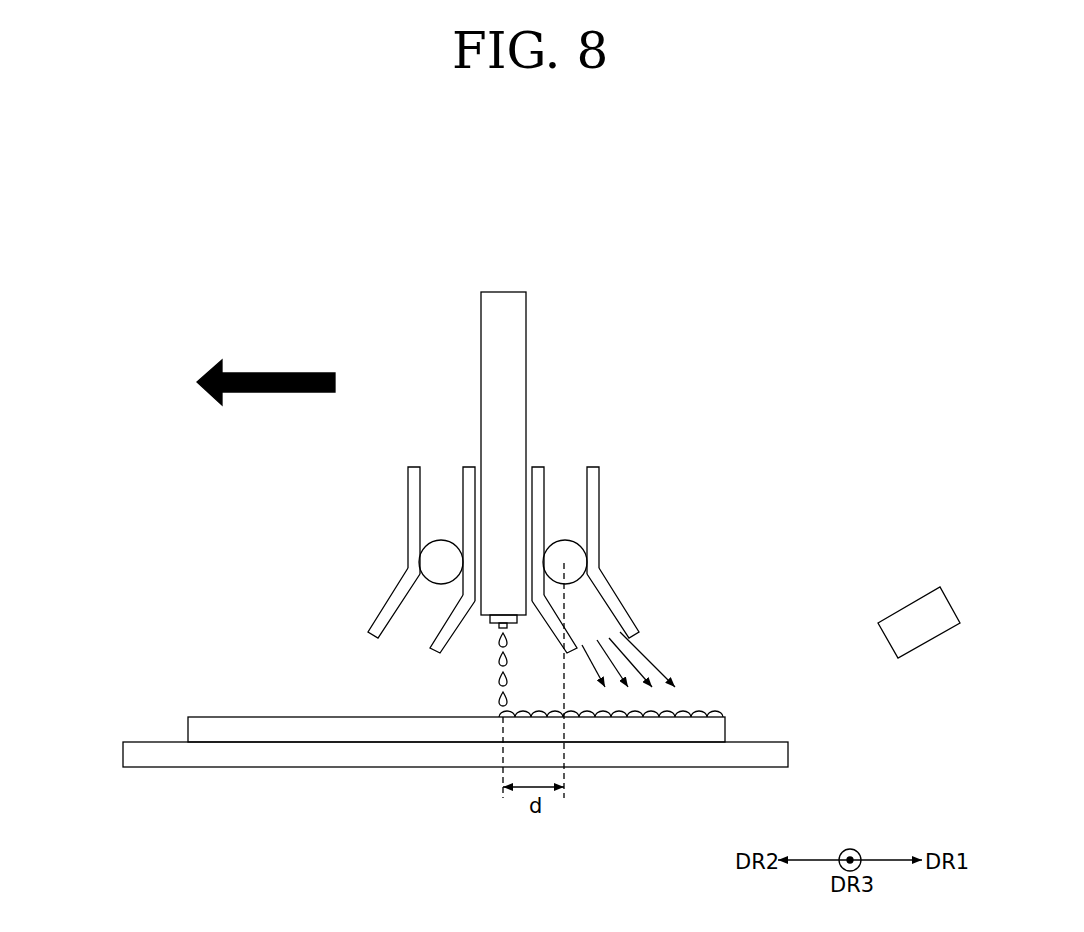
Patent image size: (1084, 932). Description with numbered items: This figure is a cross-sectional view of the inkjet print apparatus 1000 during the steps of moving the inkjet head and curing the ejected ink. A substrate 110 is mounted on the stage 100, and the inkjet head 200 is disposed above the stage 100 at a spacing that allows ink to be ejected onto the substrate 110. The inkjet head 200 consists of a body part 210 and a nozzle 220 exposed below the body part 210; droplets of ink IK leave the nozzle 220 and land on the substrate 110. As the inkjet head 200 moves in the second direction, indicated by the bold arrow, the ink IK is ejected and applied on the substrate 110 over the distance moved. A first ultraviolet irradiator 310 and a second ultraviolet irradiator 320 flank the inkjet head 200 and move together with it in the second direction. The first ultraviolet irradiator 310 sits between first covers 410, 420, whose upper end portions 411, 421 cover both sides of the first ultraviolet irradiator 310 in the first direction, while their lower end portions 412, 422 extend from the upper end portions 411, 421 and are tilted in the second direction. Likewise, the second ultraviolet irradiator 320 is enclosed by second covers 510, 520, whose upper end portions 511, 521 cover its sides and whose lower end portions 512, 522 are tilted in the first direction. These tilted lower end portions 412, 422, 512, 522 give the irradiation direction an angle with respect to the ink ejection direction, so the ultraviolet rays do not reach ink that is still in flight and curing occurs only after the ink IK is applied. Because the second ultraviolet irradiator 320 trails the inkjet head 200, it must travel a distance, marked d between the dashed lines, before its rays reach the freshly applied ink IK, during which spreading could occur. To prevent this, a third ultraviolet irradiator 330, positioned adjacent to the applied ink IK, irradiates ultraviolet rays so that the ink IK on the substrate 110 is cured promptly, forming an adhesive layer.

The inkjet print apparatus 1000 is at (694, 278).
The stage 100 is at (137, 755).
The substrate 110 is at (196, 730).
The inkjet head 200 is at (511, 459).
The body part 210 is at (520, 334).
The nozzle 220 is at (494, 624).
The first ultraviolet irradiator 310 is at (432, 560).
The second ultraviolet irradiator 320 is at (576, 559).
The third ultraviolet irradiator 330 is at (927, 633).
The first cover 410 is at (370, 515).
The upper end portion 411 is at (408, 528).
The lower end portion 412 is at (395, 596).
The first cover 420 is at (403, 531).
The upper end portion 421 is at (477, 525).
The lower end portion 422 is at (428, 628).
The second cover 510 is at (604, 522).
The upper end portion 511 is at (530, 525).
The lower end portion 512 is at (550, 608).
The second cover 520 is at (637, 515).
The upper end portion 521 is at (599, 528).
The lower end portion 522 is at (612, 595).
The ink IK is at (500, 717).